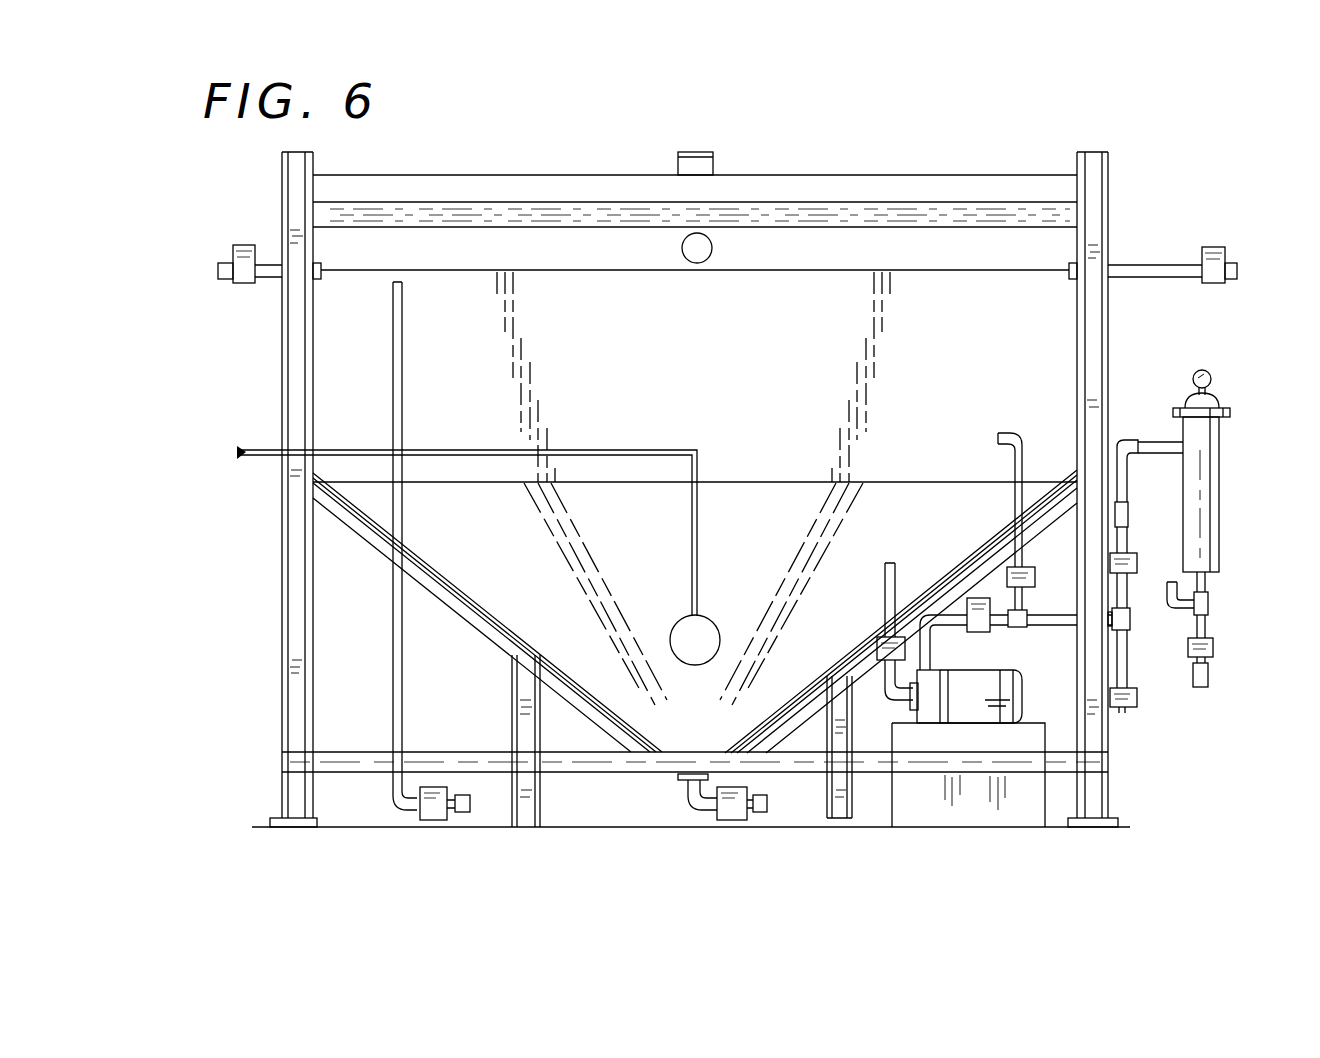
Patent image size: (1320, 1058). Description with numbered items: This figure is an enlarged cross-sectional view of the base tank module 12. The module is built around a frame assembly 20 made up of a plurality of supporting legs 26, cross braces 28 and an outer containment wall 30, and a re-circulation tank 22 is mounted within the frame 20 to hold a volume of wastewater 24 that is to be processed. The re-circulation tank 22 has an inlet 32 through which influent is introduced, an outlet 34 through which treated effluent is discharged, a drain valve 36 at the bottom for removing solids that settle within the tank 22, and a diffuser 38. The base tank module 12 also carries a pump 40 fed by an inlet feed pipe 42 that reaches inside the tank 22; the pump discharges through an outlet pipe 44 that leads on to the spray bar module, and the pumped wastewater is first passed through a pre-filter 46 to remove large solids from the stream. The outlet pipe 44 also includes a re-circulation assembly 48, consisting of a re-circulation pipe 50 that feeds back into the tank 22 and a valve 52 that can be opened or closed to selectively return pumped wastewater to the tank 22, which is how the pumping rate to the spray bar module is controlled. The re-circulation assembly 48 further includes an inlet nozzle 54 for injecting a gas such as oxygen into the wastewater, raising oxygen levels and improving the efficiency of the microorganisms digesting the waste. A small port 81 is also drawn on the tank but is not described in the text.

The base tank module 12 is at (250, 851).
The frame assembly 20 is at (268, 612).
The re-circulation tank 22 is at (463, 625).
The wastewater 24 is at (822, 315).
The supporting legs 26 is at (290, 528).
The cross braces 28 is at (340, 765).
The outer containment wall 30 is at (290, 330).
The inlet 32 is at (272, 262).
The outlet 34 is at (1150, 272).
The drain valve 36 is at (697, 808).
The diffuser 38 is at (682, 647).
The pump 40 is at (978, 707).
The inlet feed pipe 42 is at (885, 580).
The outlet pipe 44 is at (962, 622).
The pre-filter 46 is at (1205, 463).
The re-circulation assembly 48 is at (1045, 558).
The re-circulation pipe 50 is at (1020, 455).
The valve 52 is at (1035, 582).
The inlet nozzle 54 is at (1017, 547).
The overflow port 81 is at (690, 248).